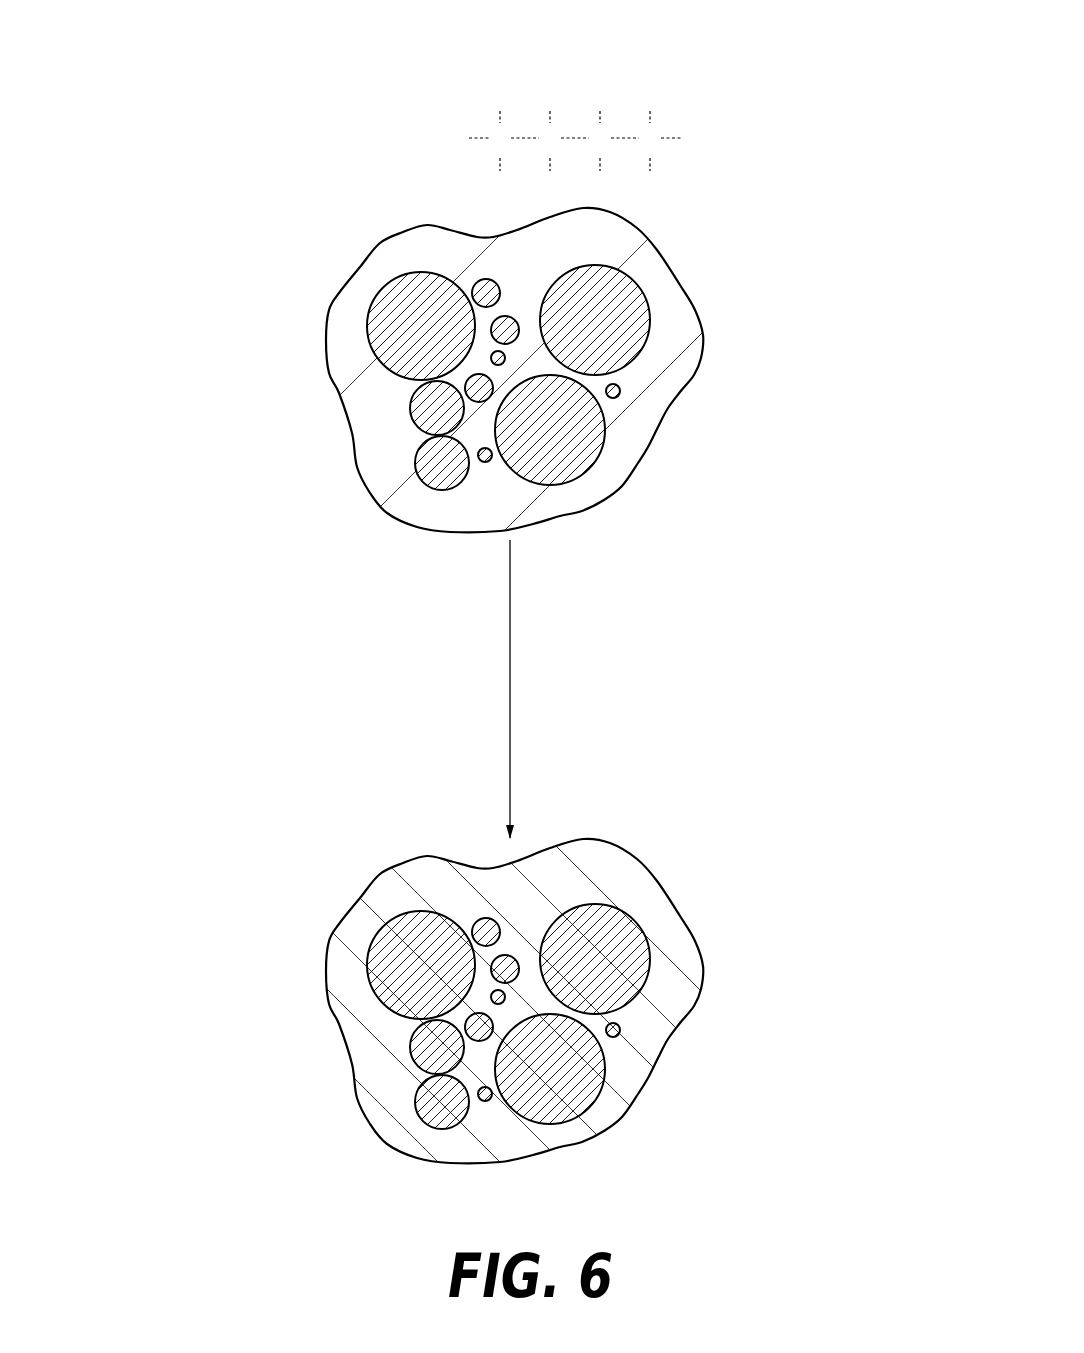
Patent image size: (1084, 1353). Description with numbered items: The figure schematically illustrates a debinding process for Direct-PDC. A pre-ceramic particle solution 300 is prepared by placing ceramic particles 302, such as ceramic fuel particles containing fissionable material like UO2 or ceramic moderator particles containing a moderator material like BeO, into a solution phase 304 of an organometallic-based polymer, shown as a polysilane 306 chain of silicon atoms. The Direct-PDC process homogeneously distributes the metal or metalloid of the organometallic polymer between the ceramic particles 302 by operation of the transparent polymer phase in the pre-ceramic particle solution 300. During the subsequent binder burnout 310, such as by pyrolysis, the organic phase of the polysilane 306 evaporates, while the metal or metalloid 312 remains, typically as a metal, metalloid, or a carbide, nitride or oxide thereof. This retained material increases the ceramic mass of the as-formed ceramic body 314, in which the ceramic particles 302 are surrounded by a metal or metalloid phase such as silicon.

The pre-ceramic particle solution 300 is at (660, 460).
The ceramic particle 302 is at (414, 410).
The solution phase 304 is at (403, 484).
The polysilane 306 is at (513, 58).
The binder burnout 310 is at (367, 670).
The metal or metalloid 312 is at (598, 875).
The as-formed ceramic body 314 is at (620, 1145).